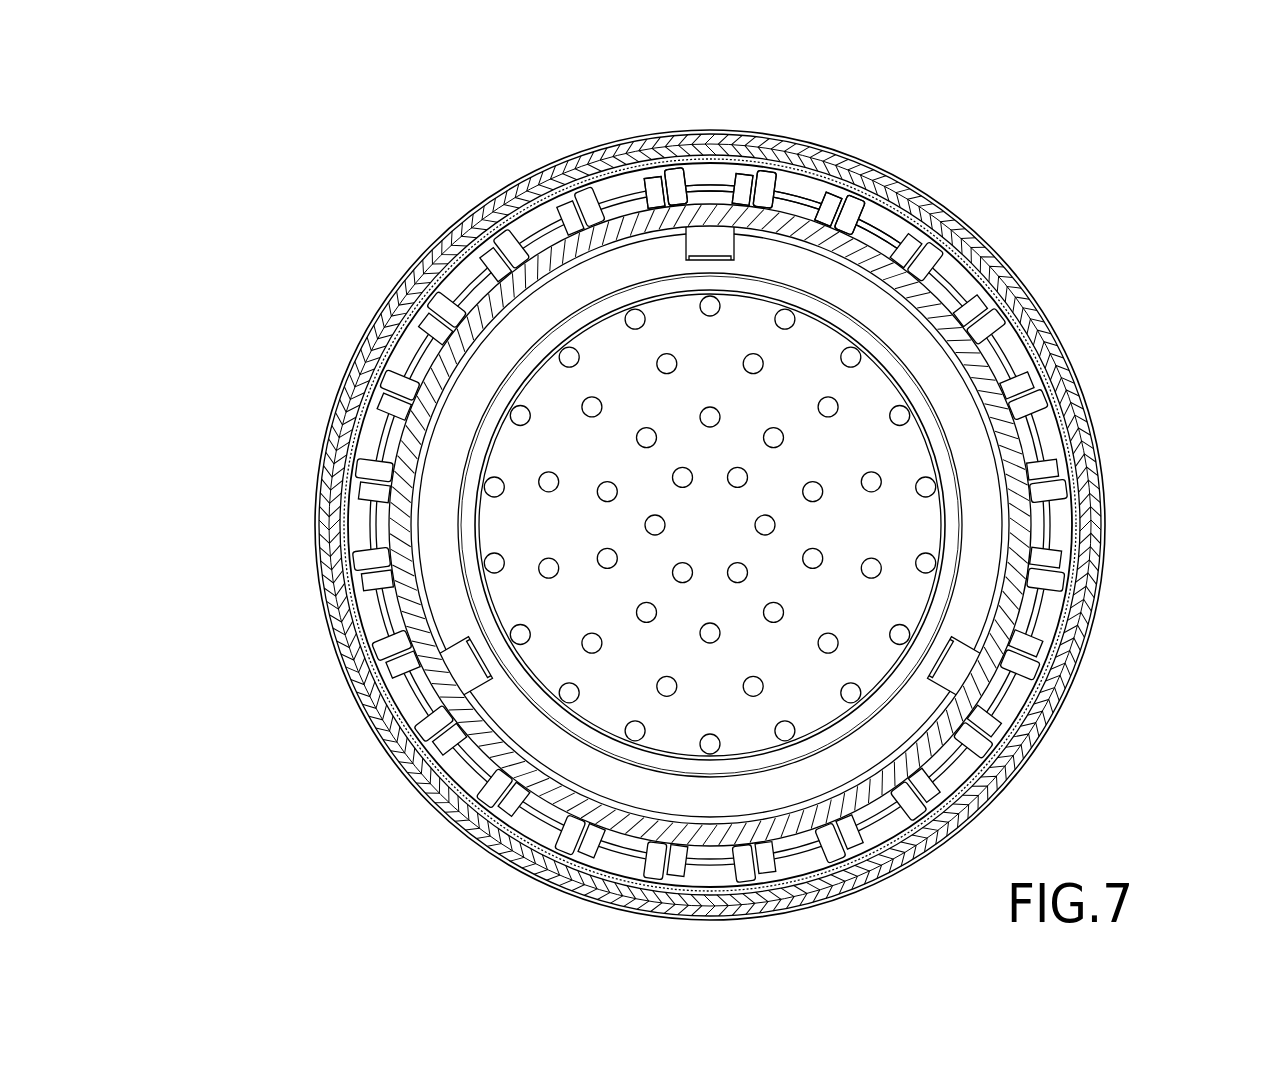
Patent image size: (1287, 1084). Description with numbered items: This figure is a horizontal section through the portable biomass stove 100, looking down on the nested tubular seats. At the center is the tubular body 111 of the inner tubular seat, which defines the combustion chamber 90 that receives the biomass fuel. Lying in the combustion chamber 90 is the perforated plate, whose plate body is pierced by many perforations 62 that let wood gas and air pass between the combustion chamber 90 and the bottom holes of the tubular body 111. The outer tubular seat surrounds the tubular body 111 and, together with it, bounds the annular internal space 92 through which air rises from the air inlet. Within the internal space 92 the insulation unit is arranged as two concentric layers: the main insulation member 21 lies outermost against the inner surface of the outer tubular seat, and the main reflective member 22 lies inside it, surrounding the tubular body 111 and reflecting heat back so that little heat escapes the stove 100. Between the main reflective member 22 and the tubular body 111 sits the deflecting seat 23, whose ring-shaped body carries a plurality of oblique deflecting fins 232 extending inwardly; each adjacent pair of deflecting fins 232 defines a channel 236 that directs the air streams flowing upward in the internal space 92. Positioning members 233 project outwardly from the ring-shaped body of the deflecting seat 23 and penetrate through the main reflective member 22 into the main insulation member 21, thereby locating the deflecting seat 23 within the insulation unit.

The portable biomass stove 100 is at (1082, 223).
The tubular body 111 is at (1040, 320).
The main insulation member 21 is at (1067, 423).
The main reflective member 22 is at (1082, 455).
The deflecting seat 23 is at (1087, 518).
The oblique deflecting fin 232 is at (853, 188).
The positioning member 233 is at (908, 197).
The channel 236 is at (613, 188).
The combustion chamber 90 is at (547, 405).
The internal space 92 is at (388, 432).
The perforation 62 is at (541, 561).